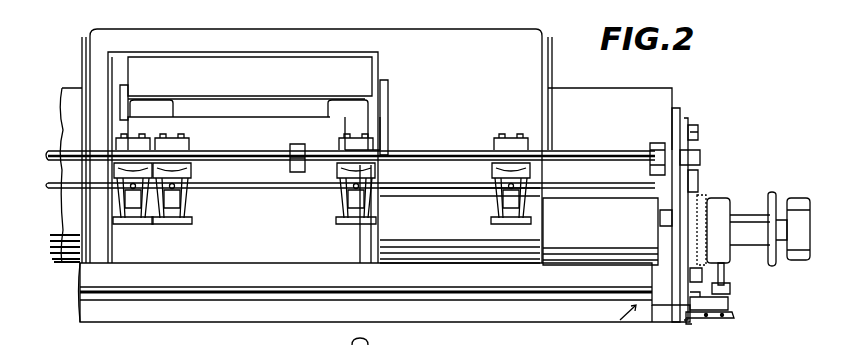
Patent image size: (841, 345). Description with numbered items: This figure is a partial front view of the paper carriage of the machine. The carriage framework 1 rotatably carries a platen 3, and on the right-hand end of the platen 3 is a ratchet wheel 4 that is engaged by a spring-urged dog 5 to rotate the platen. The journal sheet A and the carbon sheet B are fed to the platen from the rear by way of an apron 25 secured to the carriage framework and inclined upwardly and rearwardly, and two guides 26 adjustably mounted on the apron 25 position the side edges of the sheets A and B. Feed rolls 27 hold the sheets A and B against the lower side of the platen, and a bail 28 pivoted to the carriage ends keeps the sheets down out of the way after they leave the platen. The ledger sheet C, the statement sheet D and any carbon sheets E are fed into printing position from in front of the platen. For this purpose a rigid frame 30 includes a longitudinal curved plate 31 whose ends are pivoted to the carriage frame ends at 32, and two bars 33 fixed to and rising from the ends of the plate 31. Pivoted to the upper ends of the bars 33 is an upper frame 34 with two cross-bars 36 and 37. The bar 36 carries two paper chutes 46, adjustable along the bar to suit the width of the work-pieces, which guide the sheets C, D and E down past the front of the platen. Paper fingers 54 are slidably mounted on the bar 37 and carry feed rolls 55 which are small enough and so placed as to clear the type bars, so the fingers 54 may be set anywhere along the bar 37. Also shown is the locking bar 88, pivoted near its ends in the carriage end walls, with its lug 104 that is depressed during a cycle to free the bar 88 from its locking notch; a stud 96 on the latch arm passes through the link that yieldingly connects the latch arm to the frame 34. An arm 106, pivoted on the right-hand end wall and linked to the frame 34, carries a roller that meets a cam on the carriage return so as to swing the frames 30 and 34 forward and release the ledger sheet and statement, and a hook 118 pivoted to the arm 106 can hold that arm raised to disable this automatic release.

The journal sheet A is at (432, 32).
The carbon sheet B is at (380, 52).
The ledger sheet C is at (208, 60).
The statement sheet D is at (304, 104).
The carbon sheet E is at (282, 98).
The carriage framework 1 is at (682, 116).
The platen 3 is at (594, 208).
The ratchet wheel 4 is at (702, 210).
The dog 5 is at (724, 272).
The apron 25 is at (604, 98).
The guides 26 is at (82, 80).
The feed rolls 27 is at (345, 339).
The bail 28 is at (450, 196).
The rigid frame 30 is at (619, 323).
The longitudinal curved plate 31 is at (280, 270).
The pivot 32 is at (668, 322).
The bars 33 is at (660, 215).
The upper frame 34 is at (698, 156).
The cross-bar 36 is at (590, 151).
The cross-bar 37 is at (636, 152).
The paper chutes 46 is at (124, 85).
The paper fingers 54 is at (142, 222).
The feed rolls 55 is at (124, 204).
The locking bar 88 is at (734, 315).
The stud 96 is at (690, 322).
The lug 104 is at (728, 302).
The arm 106 is at (698, 178).
The hook 118 is at (700, 138).